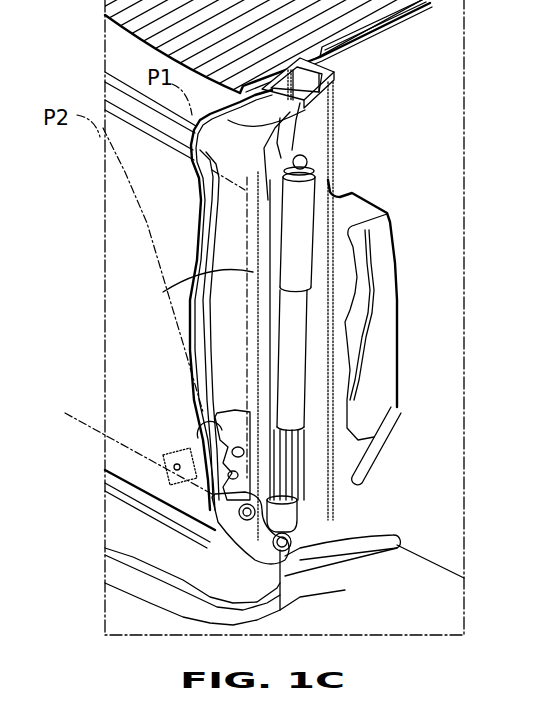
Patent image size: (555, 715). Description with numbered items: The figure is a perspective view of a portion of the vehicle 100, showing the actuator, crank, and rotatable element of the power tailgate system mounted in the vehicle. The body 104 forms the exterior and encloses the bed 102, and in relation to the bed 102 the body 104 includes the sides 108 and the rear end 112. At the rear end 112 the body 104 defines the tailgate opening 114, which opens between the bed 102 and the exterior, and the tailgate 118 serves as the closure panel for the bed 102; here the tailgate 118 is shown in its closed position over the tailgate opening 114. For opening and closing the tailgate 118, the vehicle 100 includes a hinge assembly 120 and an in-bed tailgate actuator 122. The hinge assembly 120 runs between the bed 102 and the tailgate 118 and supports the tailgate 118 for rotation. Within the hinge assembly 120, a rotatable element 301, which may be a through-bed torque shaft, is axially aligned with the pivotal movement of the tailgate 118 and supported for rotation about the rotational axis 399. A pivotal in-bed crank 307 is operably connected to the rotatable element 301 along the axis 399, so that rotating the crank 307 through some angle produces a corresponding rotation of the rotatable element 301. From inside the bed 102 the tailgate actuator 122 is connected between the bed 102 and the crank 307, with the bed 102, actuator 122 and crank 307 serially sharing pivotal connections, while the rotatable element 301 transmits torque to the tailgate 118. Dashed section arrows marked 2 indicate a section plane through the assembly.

The vehicle 100 is at (469, 22).
The body 104 is at (469, 53).
The bed 102 is at (425, 106).
The sides 108 is at (425, 138).
The rear end 112 is at (203, 188).
The tailgate opening 114 is at (197, 240).
The tailgate 118 is at (165, 304).
The in-bed tailgate actuator 122 is at (307, 323).
The hinge assembly 120 is at (255, 505).
The rotatable element 301 is at (240, 512).
The pivotal in-bed crank 307 is at (292, 546).
The rotatable element rotational axis 399 is at (82, 438).
The section line 2- 2 is at (338, 77).